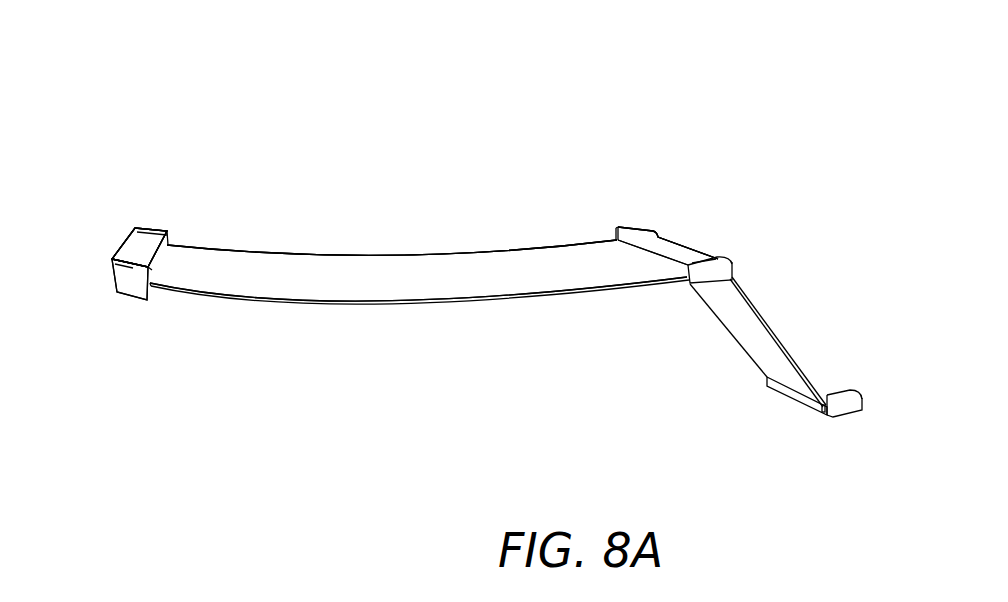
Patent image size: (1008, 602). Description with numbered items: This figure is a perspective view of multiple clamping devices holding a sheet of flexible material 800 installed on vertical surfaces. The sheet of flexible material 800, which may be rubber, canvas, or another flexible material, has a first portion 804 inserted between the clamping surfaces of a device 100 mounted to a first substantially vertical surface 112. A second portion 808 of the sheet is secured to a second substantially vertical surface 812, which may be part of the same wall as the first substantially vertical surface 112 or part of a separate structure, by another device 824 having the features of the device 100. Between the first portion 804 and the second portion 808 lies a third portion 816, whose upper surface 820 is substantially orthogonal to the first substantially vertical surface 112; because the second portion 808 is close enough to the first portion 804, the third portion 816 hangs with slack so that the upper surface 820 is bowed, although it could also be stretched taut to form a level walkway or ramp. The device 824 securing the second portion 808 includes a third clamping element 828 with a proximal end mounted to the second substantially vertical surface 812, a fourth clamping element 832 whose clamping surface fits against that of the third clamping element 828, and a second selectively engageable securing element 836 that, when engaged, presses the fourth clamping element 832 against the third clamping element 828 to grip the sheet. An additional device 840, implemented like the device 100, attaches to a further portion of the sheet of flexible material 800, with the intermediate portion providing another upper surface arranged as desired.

The device 100 is at (690, 242).
The first substantially vertical surface 112 is at (778, 207).
The sheet of flexible material 800 is at (388, 279).
The first portion 804 is at (615, 232).
The second portion 808 is at (172, 233).
The second substantially vertical surface 812 is at (178, 177).
The third portion 816 is at (483, 270).
The upper surface 820 is at (303, 277).
The another device 824 is at (142, 227).
The third clamping element 828 is at (153, 287).
The fourth clamping element 832 is at (133, 252).
The second selectively engageable securing element 836 is at (127, 278).
The additional device 840 is at (838, 388).